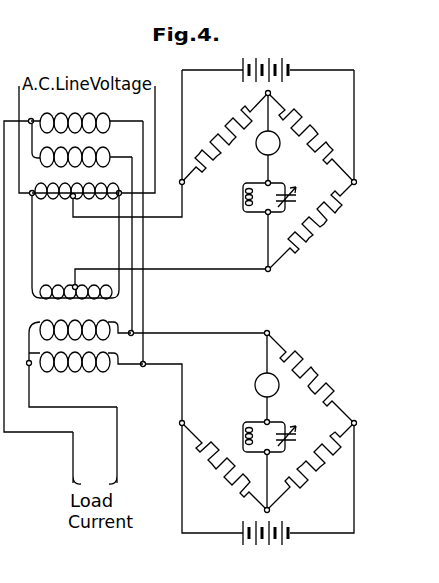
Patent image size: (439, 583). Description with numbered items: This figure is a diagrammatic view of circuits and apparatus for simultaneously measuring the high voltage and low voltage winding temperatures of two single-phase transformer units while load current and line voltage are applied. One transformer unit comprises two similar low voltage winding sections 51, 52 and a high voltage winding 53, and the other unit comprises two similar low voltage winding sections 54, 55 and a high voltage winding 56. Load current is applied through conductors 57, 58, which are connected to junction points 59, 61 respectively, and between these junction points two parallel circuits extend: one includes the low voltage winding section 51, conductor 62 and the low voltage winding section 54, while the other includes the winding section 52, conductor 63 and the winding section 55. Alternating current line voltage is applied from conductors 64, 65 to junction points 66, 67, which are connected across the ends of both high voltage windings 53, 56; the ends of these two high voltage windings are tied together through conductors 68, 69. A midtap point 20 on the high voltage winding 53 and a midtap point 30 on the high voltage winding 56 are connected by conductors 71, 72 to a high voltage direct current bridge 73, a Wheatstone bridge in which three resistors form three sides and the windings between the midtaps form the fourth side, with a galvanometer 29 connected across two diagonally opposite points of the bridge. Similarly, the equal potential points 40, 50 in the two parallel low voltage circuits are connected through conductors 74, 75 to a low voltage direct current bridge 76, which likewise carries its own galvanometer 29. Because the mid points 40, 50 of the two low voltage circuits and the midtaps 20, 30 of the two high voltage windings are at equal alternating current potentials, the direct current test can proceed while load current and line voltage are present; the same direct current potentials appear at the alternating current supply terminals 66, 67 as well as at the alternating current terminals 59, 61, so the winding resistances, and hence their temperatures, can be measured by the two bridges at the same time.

The conductor 64 is at (19, 86).
The conductor 65 is at (165, 74).
The junction point 59 is at (31, 118).
The low voltage winding section 51 is at (78, 119).
The low voltage winding section 52 is at (100, 153).
The junction point 66 is at (32, 196).
The junction point 67 is at (86, 197).
The high voltage winding 53 is at (75, 202).
The midtap point 20 is at (72, 199).
The conductor 68 is at (36, 249).
The conductor 69 is at (119, 245).
The high voltage winding 56 is at (65, 288).
The midtap point 30 is at (78, 286).
The conductor 62 is at (145, 255).
The conductor 63 is at (133, 287).
The conductor 71 is at (183, 214).
The conductor 72 is at (203, 272).
The equal potential point 40 is at (130, 330).
The low voltage winding section 55 is at (96, 340).
The equal potential point 50 is at (145, 362).
The low voltage winding section 54 is at (93, 369).
The junction point 61 is at (29, 366).
The conductor 74 is at (213, 334).
The conductor 75 is at (182, 392).
The conductor 57 is at (72, 462).
The conductor 58 is at (117, 444).
The high voltage direct current bridge 73 is at (255, 175).
The low voltage direct current bridge 76 is at (245, 415).
The galvanometer 29 is at (277, 151).